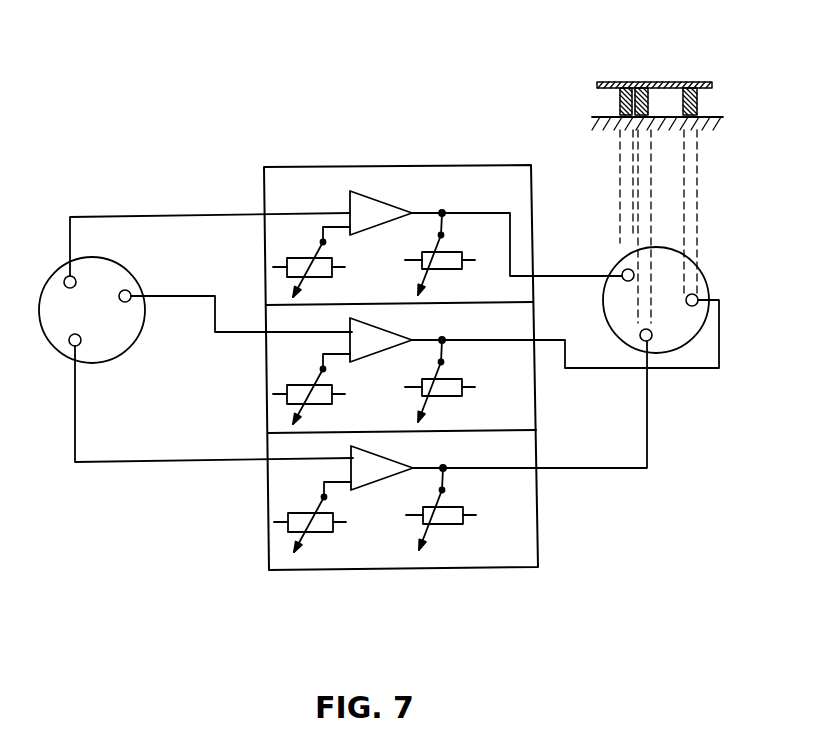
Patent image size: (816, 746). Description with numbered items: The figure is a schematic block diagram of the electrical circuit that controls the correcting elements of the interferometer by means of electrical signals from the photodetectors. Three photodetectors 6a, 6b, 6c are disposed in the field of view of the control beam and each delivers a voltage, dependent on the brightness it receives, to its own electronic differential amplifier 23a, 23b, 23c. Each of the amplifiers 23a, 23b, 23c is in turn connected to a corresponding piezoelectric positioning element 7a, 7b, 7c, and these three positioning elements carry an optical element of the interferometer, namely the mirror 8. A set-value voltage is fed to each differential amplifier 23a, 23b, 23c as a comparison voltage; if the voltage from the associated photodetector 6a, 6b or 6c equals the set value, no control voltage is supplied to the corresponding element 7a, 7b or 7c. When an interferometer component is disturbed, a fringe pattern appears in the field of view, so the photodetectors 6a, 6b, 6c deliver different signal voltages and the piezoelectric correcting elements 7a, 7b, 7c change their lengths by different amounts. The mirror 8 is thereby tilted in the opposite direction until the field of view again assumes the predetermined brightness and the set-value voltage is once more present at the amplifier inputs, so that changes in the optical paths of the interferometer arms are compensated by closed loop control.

The mirror 8 is at (606, 82).
The piezoelectric positioning element 7a is at (620, 100).
The piezoelectric positioning element 7b is at (643, 82).
The piezoelectric positioning element 7c is at (688, 82).
The photodetector 6a is at (67, 278).
The photodetector 6b is at (72, 347).
The photodetector 6c is at (130, 292).
The differential amplifier 23a is at (285, 175).
The differential amplifier 23b is at (530, 548).
The differential amplifier 23c is at (528, 405).